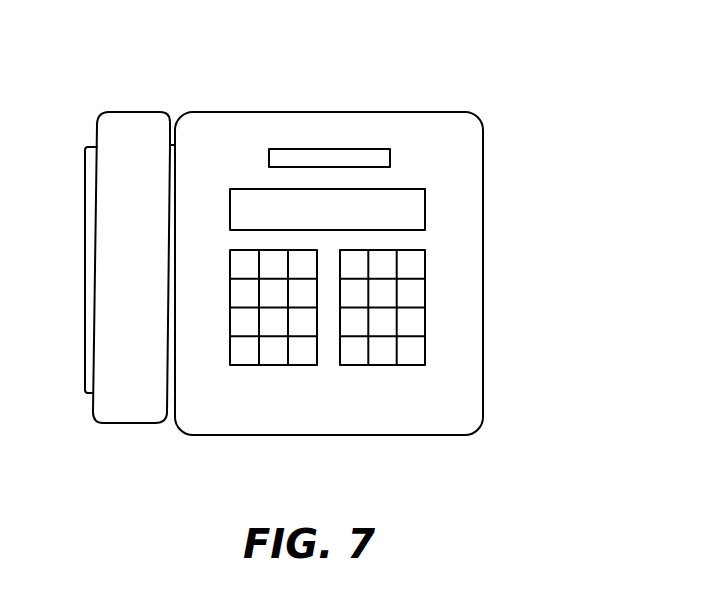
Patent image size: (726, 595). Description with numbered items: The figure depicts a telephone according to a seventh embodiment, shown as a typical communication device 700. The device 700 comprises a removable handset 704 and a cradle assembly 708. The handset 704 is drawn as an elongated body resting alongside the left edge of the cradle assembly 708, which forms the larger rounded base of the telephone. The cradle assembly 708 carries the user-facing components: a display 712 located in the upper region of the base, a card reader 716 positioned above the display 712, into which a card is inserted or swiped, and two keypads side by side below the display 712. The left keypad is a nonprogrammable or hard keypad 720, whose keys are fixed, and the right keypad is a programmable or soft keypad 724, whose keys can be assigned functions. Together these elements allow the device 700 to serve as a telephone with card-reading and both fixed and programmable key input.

The communication device 700 is at (310, 300).
The removable handset 704 is at (119, 427).
The cradle assembly 708 is at (197, 436).
The display 712 is at (425, 213).
The card reader 716 is at (345, 157).
The nonprogrammable or hard keypad 720 is at (273, 365).
The programmable or soft keypad 724 is at (382, 365).